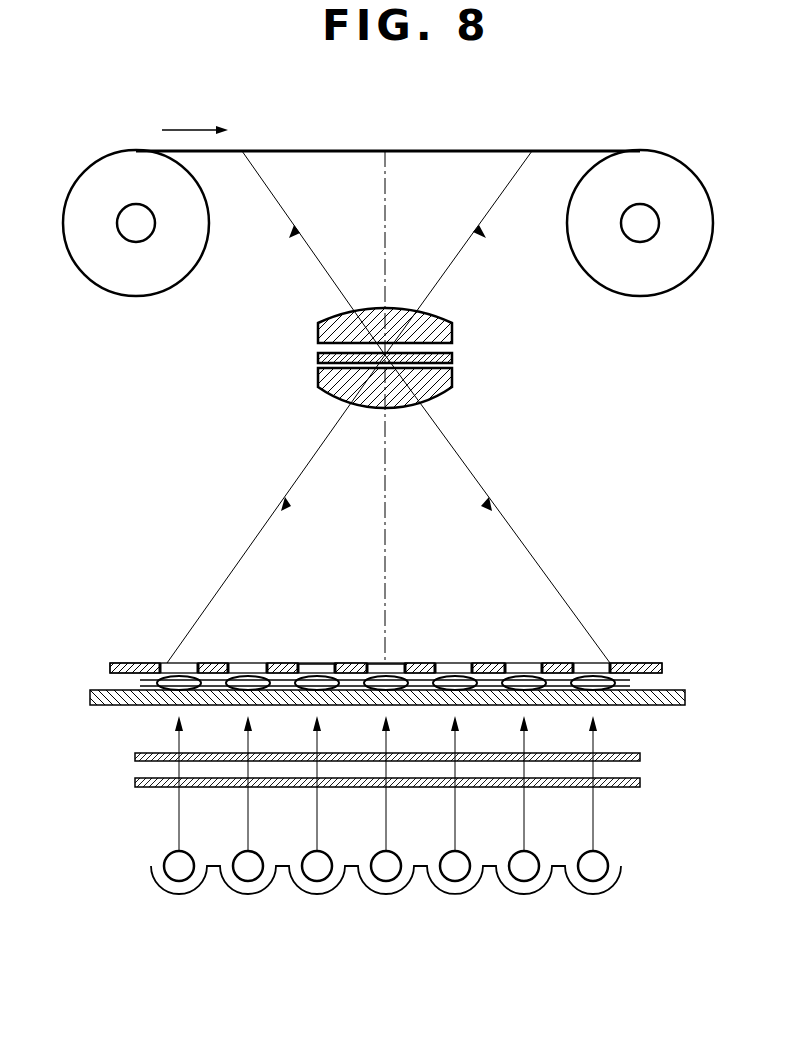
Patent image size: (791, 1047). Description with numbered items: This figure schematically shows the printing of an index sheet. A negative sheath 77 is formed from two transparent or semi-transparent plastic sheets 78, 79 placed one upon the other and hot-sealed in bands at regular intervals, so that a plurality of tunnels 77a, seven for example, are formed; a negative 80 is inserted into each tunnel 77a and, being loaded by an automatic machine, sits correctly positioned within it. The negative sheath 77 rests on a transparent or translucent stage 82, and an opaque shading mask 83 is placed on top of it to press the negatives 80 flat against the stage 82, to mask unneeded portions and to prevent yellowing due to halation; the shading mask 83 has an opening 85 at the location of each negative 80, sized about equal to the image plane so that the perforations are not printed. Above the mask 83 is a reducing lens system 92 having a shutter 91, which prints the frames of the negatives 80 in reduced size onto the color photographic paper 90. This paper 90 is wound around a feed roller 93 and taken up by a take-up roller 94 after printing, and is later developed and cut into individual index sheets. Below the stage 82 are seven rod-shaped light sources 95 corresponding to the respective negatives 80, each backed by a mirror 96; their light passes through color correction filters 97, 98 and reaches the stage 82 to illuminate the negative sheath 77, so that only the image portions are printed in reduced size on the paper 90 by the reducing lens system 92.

The color photographic paper 90 is at (500, 150).
The shutter 91 is at (318, 358).
The reducing lens system 92 is at (463, 314).
The feed roller 93 is at (130, 232).
The take-up roller 94 is at (632, 232).
The shading mask 83 is at (386, 639).
The plastic sheet 78 is at (240, 676).
The negative sheath 77 is at (284, 660).
The plastic sheet 79 is at (314, 662).
The opening 85 is at (394, 662).
The negative 80 is at (452, 678).
The tunnel 77a is at (521, 678).
The stage 82 is at (112, 706).
The color correction filter 98 is at (632, 757).
The color correction filter 97 is at (632, 788).
The rod-shaped light source 95 is at (178, 870).
The mirror 96 is at (249, 894).